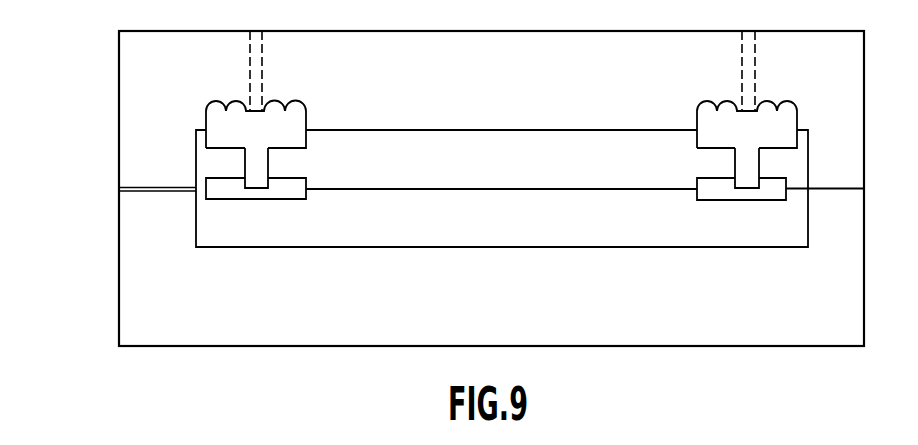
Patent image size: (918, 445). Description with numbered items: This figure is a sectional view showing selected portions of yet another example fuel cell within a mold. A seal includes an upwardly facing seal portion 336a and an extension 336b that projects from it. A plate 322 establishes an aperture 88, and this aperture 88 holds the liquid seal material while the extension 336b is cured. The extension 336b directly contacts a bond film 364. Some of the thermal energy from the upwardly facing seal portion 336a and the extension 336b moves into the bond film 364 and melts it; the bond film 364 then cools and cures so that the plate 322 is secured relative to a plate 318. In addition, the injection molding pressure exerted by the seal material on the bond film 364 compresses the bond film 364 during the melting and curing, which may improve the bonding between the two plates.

The plate 318 is at (212, 219).
The plate 322 is at (202, 151).
The aperture 88 is at (250, 170).
The upwardly facing seal portion 336a is at (228, 130).
The extension 336b is at (257, 161).
The bond film 364 is at (213, 190).